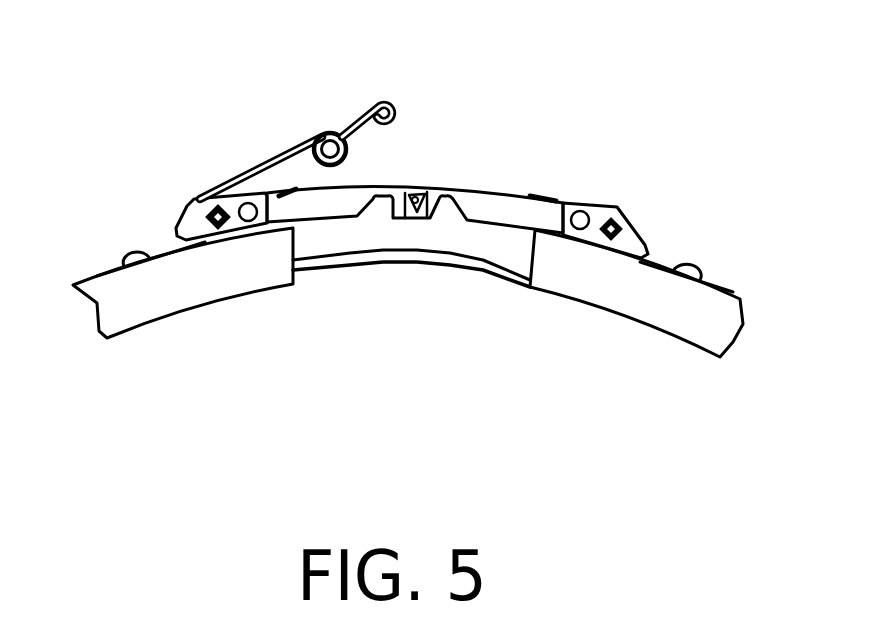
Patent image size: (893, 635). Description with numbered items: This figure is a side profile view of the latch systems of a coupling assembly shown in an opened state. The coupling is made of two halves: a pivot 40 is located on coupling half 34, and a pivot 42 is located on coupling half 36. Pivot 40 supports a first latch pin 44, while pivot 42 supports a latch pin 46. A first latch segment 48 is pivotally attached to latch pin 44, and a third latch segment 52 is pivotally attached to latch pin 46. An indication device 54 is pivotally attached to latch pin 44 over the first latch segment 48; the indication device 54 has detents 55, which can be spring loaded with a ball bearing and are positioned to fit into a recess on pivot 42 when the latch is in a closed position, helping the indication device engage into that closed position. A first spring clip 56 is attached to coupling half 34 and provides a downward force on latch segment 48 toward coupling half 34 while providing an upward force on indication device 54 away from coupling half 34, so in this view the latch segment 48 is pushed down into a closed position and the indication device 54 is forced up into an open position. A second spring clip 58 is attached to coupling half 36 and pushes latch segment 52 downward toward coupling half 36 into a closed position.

The coupling half 34 is at (115, 338).
The coupling half 36 is at (707, 357).
The pivot 40 is at (176, 233).
The pivot 42 is at (643, 232).
The first latch pin 44 is at (219, 222).
The latch pin 46 is at (612, 234).
The first latch segment 48 is at (313, 189).
The third latch segment 52 is at (488, 188).
The indication device 54 is at (200, 197).
The detents 55 is at (321, 134).
The first spring clip 56 is at (100, 270).
The second spring clip 58 is at (730, 277).